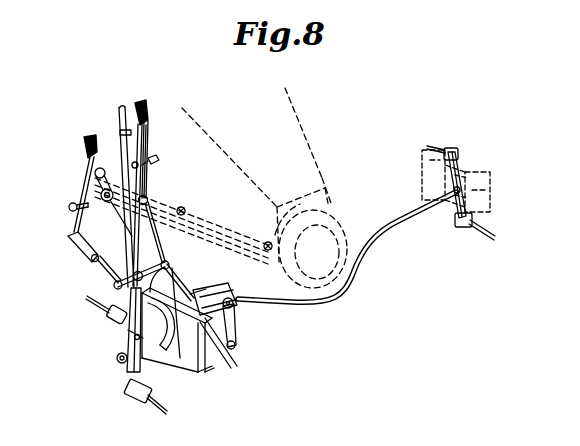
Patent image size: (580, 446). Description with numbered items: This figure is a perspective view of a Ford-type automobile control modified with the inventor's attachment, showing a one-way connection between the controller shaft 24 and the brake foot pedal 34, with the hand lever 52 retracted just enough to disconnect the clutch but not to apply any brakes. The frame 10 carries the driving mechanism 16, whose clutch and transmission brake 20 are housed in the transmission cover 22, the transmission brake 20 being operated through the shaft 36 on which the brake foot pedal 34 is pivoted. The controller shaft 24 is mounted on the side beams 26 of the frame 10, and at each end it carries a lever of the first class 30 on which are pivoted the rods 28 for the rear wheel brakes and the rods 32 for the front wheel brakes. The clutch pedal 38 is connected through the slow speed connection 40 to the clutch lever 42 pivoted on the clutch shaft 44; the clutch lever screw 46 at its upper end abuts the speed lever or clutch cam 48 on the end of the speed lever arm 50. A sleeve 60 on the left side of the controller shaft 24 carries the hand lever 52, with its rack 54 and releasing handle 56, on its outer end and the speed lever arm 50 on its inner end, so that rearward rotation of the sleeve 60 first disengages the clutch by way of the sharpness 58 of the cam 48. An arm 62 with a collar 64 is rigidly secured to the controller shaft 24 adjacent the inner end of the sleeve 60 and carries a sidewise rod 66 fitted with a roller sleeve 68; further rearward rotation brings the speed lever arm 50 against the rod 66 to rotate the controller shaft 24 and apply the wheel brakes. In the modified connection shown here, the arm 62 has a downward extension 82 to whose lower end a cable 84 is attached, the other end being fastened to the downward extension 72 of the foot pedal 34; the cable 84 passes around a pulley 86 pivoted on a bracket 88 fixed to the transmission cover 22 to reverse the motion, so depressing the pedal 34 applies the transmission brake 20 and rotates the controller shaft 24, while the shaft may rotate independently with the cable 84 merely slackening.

The frame 10 is at (492, 208).
The driving mechanism 16 is at (320, 168).
The transmission brake 20 is at (292, 103).
The transmission cover 22 is at (313, 151).
The controller shaft 24 is at (400, 228).
The side beams 26 is at (470, 175).
The rods for actuating the rear wheel brakes 28 is at (490, 238).
The levers of the first class 30 is at (462, 165).
The rods for actuating the front wheel brakes 32 is at (432, 147).
The brake foot pedal 34 is at (146, 140).
The shaft 36 is at (158, 158).
The clutch pedal 38 is at (79, 176).
The slow speed connection 40 is at (117, 280).
The clutch lever 42 is at (114, 286).
The clutch shaft 44 is at (130, 272).
The clutch lever screw 46 is at (176, 274).
The speed lever (clutch cam) 48 is at (170, 262).
The speed lever arm 50 is at (232, 274).
The hand lever 52 is at (120, 108).
The rack 54 is at (135, 338).
The releasing handle 56 is at (138, 104).
The sharpness of the crank cam 58 is at (188, 338).
The sleeve 60 is at (234, 348).
The arm 62 is at (224, 292).
The collar 64 is at (234, 306).
The rod 66 is at (218, 342).
The roller sleeve 68 is at (200, 288).
The downward extension of the foot pedal 72 is at (144, 183).
The downward extension of the arm 82 is at (234, 330).
The cable 84 is at (151, 255).
The pulley 86 is at (105, 201).
The bracket 88 is at (104, 170).